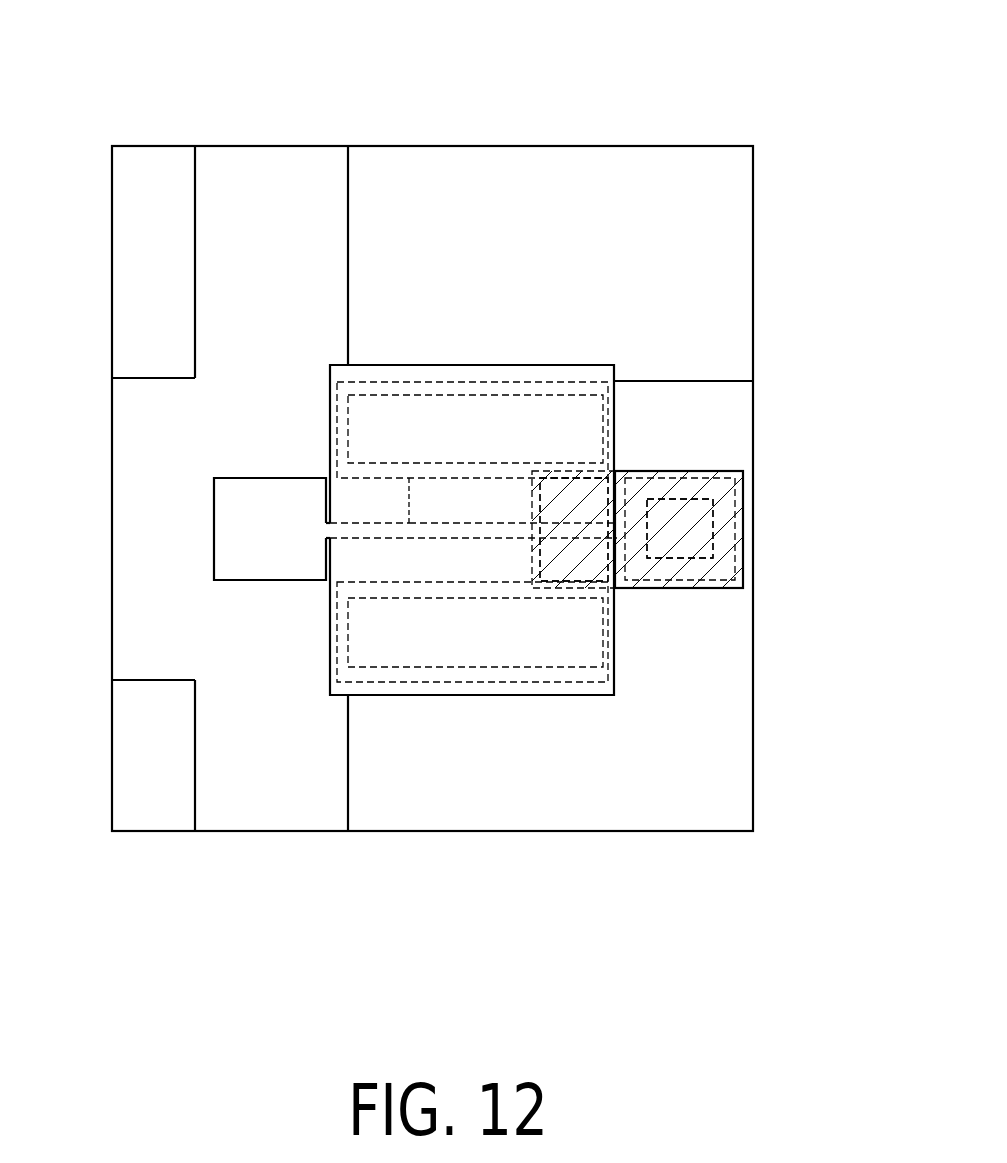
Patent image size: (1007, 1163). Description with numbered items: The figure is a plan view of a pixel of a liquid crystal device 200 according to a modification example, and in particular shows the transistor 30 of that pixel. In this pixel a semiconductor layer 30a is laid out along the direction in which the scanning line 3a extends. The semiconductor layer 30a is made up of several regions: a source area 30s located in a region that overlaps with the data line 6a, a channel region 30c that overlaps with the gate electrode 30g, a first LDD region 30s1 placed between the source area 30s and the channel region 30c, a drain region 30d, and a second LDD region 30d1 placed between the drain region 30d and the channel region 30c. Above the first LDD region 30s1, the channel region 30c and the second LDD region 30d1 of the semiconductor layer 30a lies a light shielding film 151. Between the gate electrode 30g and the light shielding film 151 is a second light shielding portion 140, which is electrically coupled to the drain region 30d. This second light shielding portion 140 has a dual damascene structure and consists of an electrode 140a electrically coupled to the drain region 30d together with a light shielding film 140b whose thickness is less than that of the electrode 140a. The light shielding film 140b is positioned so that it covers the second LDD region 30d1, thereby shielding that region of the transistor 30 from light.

The liquid crystal device 200 is at (816, 27).
The scanning line 3a is at (127, 579).
The data line 6a is at (270, 158).
The transistor 30 is at (248, 910).
The semiconductor layer 30a is at (214, 525).
The source area 30s is at (279, 530).
The first LDD region 30s1 is at (378, 530).
The channel region 30c is at (453, 530).
The gate electrode 30g is at (512, 680).
The second LDD region 30d1 is at (579, 527).
The drain region 30d is at (683, 540).
The light shielding film 151 is at (473, 365).
The second light shielding portion 140 is at (540, 285).
The electrode 140a is at (681, 527).
The light shielding film 140b is at (578, 471).